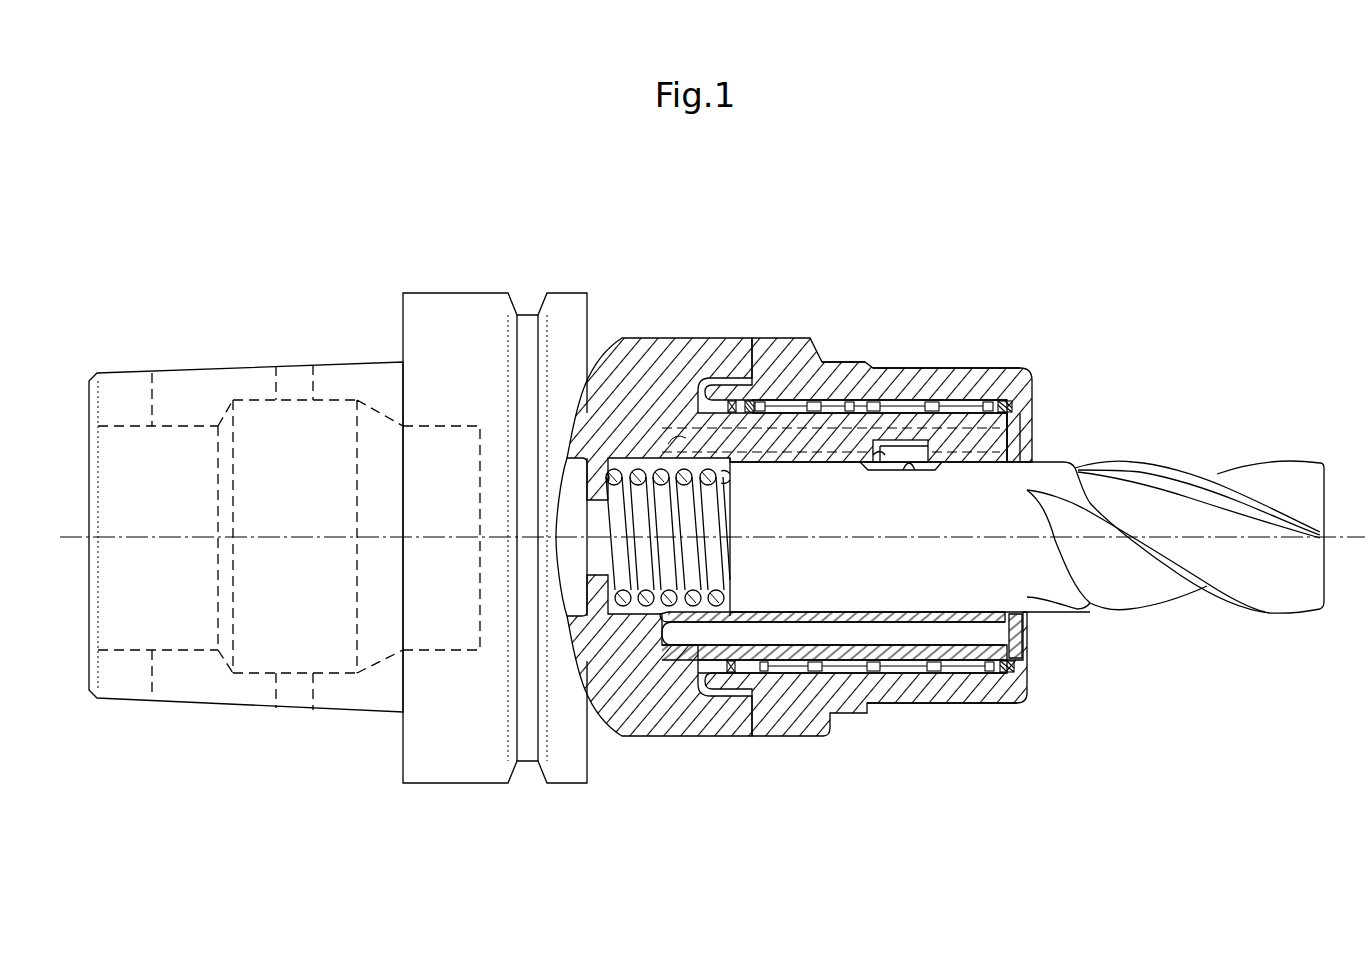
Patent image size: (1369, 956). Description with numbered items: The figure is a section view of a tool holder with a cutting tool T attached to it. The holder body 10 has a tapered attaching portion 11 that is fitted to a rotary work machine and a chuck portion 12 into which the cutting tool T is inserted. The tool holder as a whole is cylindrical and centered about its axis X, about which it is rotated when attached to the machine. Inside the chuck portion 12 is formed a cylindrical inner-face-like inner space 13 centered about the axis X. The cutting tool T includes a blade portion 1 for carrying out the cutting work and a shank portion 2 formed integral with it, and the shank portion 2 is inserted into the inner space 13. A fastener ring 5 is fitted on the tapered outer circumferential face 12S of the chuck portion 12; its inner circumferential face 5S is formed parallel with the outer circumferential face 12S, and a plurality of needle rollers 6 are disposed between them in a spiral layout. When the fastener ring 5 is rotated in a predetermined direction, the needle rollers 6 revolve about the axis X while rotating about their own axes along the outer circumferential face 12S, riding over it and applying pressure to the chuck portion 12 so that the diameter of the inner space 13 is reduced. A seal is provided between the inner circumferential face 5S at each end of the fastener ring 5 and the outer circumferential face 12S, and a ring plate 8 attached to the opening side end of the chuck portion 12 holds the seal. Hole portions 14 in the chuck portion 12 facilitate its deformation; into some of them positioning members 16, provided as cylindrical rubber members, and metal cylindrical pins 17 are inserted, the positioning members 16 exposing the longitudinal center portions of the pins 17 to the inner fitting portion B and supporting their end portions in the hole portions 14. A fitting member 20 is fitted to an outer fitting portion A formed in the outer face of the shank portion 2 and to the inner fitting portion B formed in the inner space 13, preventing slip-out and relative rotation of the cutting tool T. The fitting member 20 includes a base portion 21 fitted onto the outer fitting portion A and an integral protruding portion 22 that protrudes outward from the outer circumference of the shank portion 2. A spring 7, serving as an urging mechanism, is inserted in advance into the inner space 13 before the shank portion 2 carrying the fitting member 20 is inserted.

The blade portion 1 is at (1167, 595).
The shank portion 2 is at (852, 672).
The fastener ring 5 is at (940, 690).
The inner circumferential face 5S is at (958, 663).
The needle rollers 6 is at (790, 400).
The spring 7 is at (722, 510).
The ring plate 8 is at (1020, 640).
The holder body 10 is at (492, 225).
The tapered attaching portion 11 is at (232, 368).
The chuck portion 12 is at (840, 382).
The outer circumferential face 12S is at (955, 378).
The inner space 13 is at (658, 608).
The hole portions 14 is at (1018, 440).
The positioning members 16 is at (700, 440).
The pins 17 is at (965, 455).
The fitting member 20 is at (888, 472).
The base portion 21 is at (930, 465).
The protruding portion 22 is at (892, 378).
The outer fitting portion A is at (912, 472).
The inner fitting portion B is at (877, 456).
The cutting tool T is at (1174, 463).
The axis X is at (701, 540).